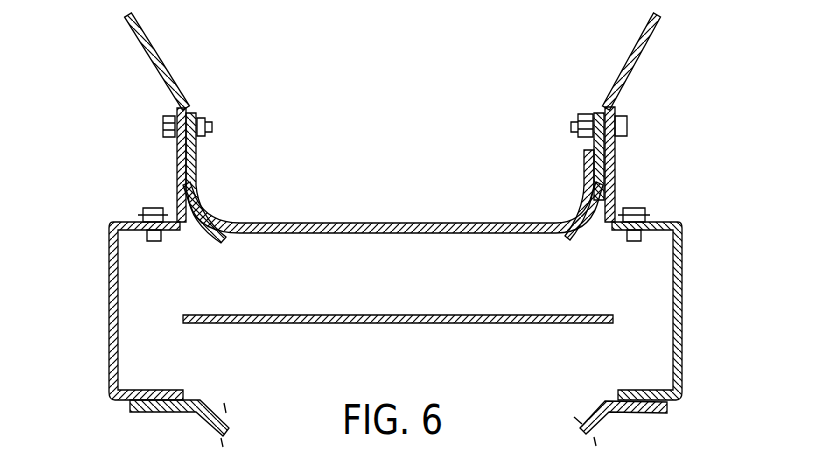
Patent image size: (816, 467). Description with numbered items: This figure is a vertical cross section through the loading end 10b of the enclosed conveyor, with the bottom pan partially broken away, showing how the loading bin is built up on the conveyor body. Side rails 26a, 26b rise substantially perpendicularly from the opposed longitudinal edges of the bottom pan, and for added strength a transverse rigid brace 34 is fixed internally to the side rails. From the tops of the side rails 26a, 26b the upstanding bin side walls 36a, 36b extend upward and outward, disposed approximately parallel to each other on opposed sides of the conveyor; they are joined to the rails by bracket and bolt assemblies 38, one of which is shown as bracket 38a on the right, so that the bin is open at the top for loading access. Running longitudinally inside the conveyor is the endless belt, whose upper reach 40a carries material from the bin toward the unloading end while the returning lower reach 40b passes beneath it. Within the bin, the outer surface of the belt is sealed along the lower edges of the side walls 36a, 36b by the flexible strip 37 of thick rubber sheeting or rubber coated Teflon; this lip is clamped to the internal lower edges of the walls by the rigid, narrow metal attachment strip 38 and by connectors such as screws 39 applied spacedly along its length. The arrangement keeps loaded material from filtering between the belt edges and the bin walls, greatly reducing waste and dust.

The loading end 10b is at (510, 65).
The side rail 26a is at (682, 297).
The side rail 26b is at (109, 278).
The rigid brace 34 is at (571, 417).
The bin side wall 36a is at (634, 60).
The bin side wall 36b is at (150, 53).
The flexible strip 37 is at (200, 168).
The bracket and bolt assembly 38 is at (176, 162).
The bracket and bolt assembly 38a is at (622, 157).
The screw 39 is at (212, 127).
The upper reach 40a is at (368, 224).
The lower reach 40b is at (442, 316).